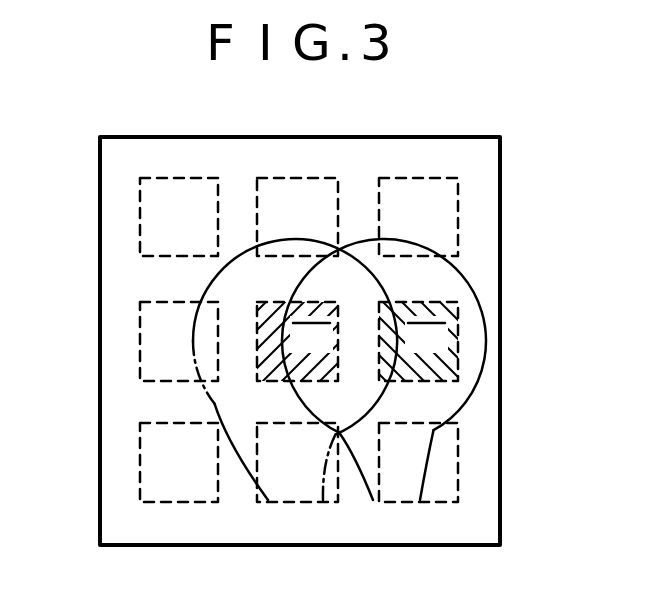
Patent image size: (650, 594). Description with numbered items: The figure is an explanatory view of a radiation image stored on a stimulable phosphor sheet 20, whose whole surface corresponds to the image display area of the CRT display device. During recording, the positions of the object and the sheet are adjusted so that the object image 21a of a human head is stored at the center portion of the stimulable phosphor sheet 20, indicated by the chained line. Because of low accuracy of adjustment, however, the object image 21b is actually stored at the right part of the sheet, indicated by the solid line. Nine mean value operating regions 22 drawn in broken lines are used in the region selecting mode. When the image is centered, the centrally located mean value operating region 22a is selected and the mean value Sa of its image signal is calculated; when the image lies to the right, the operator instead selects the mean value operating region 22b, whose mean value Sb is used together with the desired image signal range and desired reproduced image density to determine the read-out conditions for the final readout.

The stimulable phosphor sheet 20 is at (500, 163).
The object image 21a is at (215, 275).
The object image 21b is at (457, 268).
The mean value operating region 22 is at (168, 178).
The mean value operating region 22a is at (315, 302).
The mean value operating region 22b is at (458, 302).